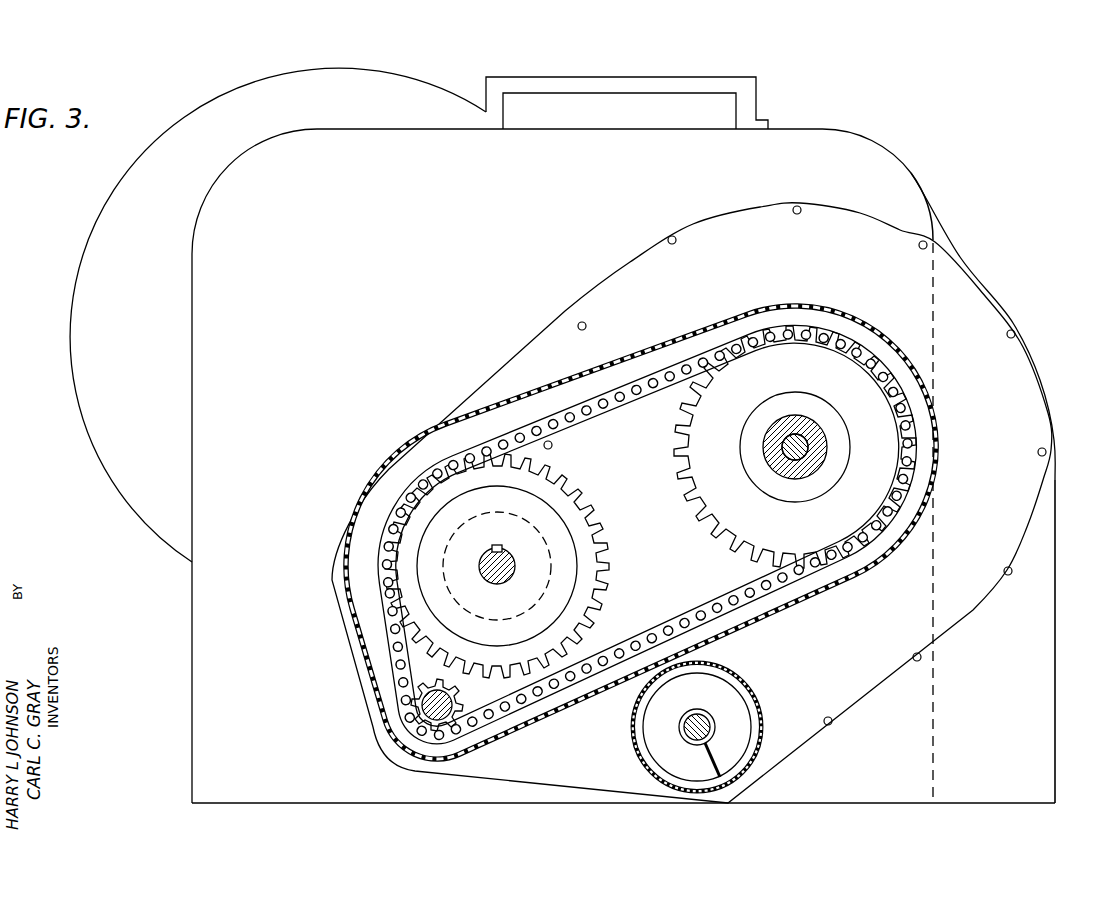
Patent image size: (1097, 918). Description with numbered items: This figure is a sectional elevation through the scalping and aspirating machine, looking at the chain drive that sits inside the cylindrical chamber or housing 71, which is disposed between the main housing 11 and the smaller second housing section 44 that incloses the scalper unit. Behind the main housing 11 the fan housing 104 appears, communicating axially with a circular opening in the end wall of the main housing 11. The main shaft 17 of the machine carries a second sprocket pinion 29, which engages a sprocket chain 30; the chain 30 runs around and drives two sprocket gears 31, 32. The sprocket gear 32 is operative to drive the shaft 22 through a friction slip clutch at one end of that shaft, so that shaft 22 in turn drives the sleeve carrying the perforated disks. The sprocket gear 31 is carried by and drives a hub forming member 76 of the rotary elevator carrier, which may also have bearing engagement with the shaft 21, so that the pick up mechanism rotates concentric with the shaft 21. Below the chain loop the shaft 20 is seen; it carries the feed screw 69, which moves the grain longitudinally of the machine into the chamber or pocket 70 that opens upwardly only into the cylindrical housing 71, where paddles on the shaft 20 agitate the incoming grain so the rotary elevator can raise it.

The main housing 11 is at (822, 140).
The fan housing 104 is at (140, 506).
The second housing section 44 is at (1027, 747).
The cylindrical chamber or housing 71 is at (972, 608).
The main shaft 17 is at (405, 711).
The sprocket chain 30 is at (650, 628).
The sprocket gear 32 is at (590, 608).
The shaft 22 is at (515, 567).
The sprocket gear 31 is at (743, 523).
The hub forming member 76 is at (840, 448).
The shaft 21 is at (797, 462).
The second sprocket pinion 29 is at (462, 700).
The feed screw 69 is at (715, 702).
The shaft 20 is at (707, 725).
The chamber or pocket 70 is at (757, 753).